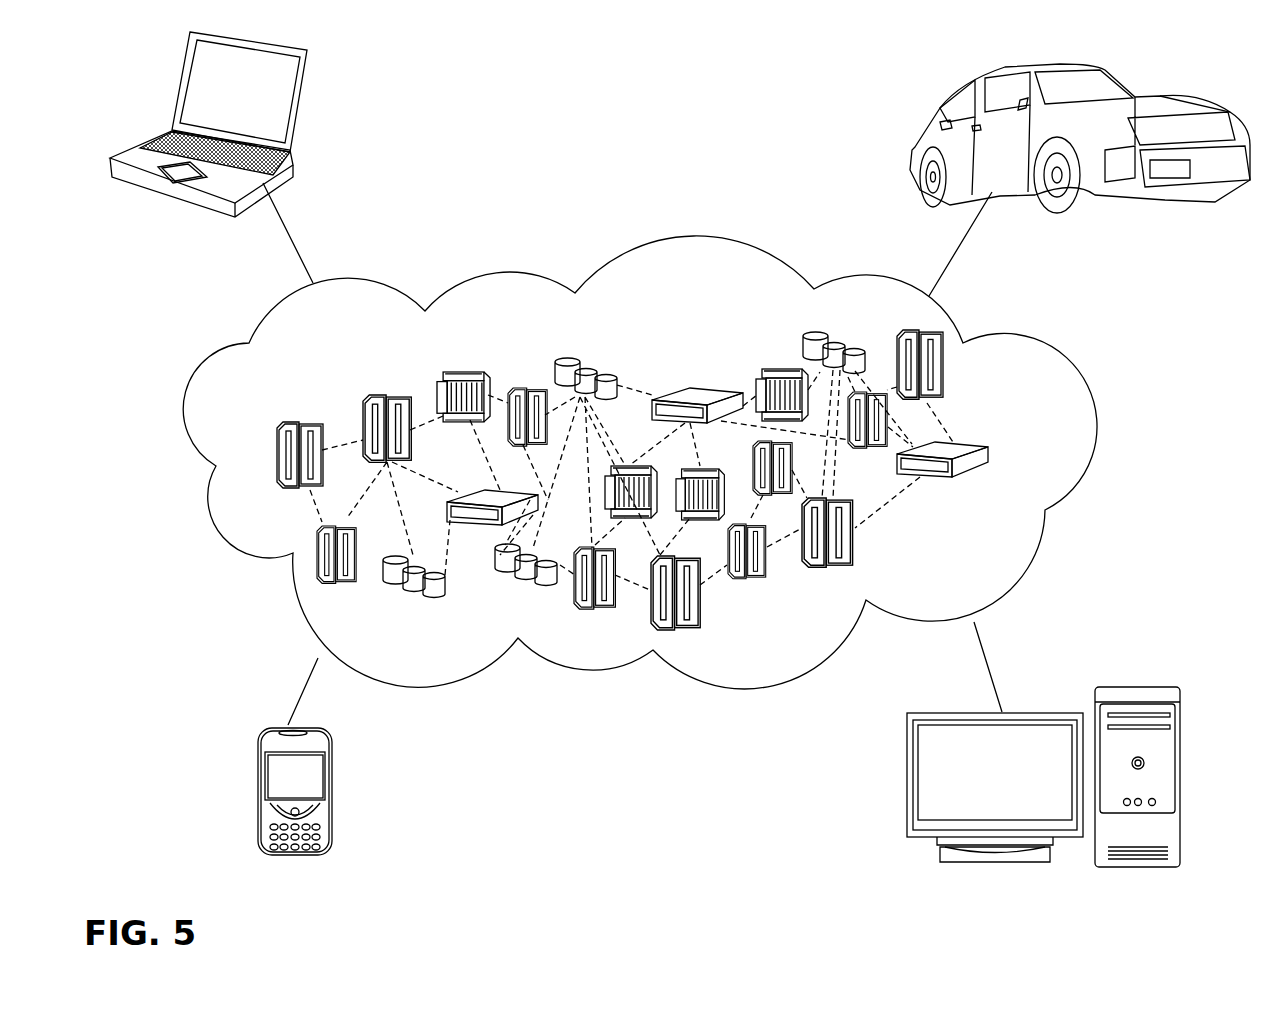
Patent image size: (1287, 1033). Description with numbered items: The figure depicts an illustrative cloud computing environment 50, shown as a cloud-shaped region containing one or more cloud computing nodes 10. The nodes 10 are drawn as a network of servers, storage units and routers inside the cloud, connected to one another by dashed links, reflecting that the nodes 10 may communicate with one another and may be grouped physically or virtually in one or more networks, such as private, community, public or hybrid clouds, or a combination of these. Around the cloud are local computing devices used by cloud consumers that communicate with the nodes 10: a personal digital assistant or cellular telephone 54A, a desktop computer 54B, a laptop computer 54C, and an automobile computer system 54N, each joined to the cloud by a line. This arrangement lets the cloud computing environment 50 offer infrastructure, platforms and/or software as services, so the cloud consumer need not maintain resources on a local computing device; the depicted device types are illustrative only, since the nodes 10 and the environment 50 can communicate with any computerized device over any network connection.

The cloud computing environment 50 is at (1055, 362).
The cloud computing nodes 10 is at (1036, 454).
The personal digital assistant (PDA) or cellular telephone 54A is at (258, 797).
The desktop computer 54B is at (1142, 683).
The laptop computer 54C is at (300, 108).
The automobile computer system 54N is at (917, 115).